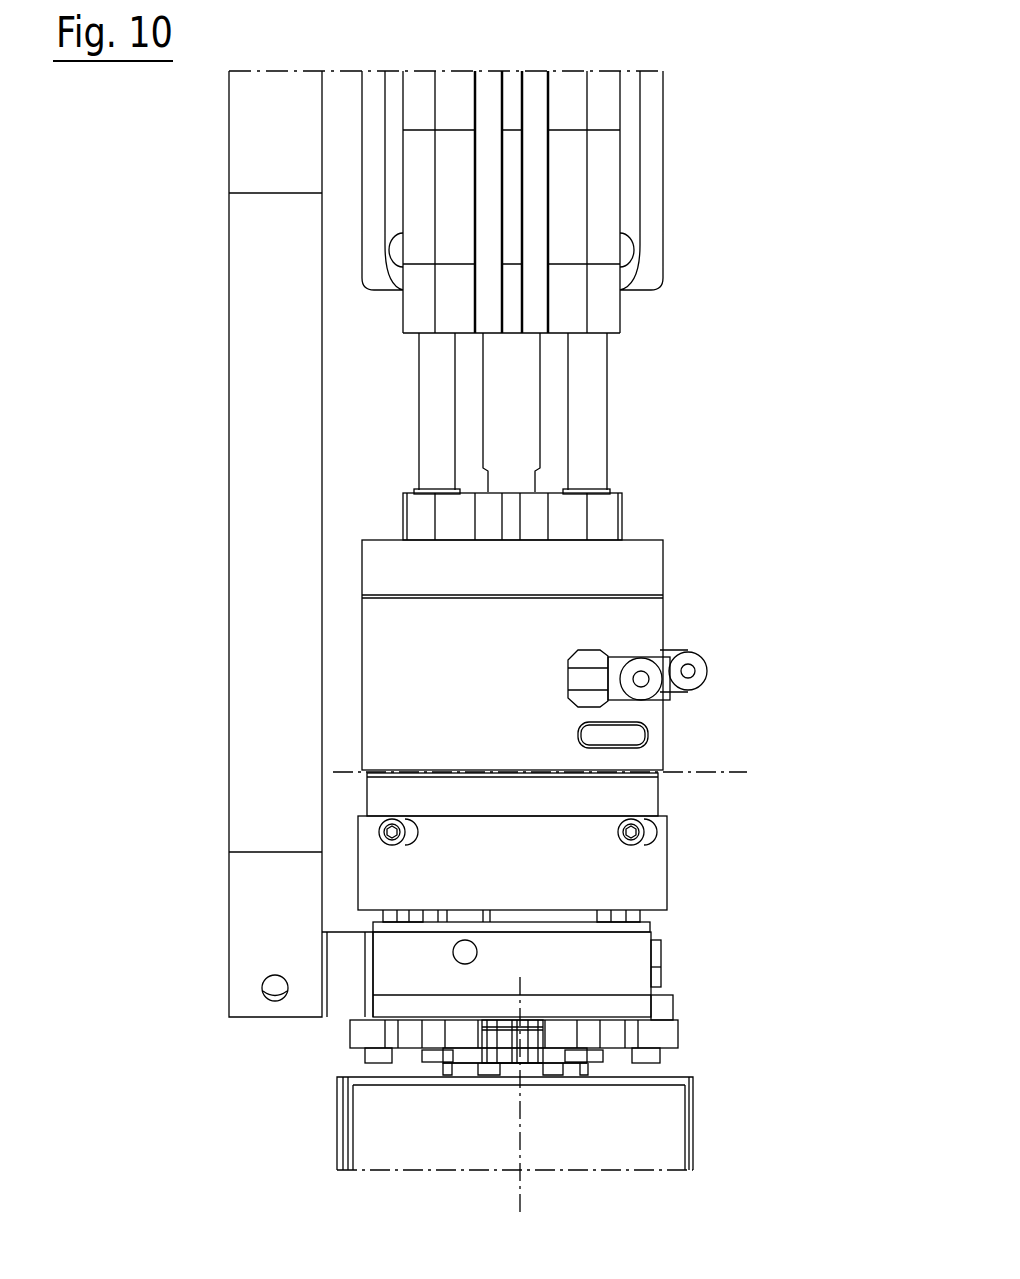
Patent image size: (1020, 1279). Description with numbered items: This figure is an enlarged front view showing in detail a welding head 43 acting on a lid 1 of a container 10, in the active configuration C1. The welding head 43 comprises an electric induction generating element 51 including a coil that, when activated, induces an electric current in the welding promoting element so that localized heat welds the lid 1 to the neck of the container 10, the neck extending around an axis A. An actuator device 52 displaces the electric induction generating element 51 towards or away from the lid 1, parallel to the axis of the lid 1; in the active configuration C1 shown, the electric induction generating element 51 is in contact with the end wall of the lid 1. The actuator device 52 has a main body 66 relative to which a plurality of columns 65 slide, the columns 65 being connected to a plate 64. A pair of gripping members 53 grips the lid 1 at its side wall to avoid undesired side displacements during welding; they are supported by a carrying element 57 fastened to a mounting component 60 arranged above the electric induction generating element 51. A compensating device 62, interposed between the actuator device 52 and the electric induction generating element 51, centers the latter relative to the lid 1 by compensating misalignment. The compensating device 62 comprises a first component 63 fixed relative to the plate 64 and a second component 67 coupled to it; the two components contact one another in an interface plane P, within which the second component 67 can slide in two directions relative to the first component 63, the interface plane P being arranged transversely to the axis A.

The lid 1 is at (533, 1043).
The container 10 is at (678, 1132).
The welding head 43 is at (699, 331).
The electric induction generating element 51 is at (628, 1008).
The actuator device 52 is at (599, 207).
The gripping members 53 is at (362, 1032).
The carrying element 57 is at (662, 980).
The mounting component 60 is at (660, 927).
The compensating device 62 is at (739, 660).
The first component 63 is at (663, 612).
The plate 64 is at (622, 520).
The columns 65 is at (437, 418).
The main body 66 is at (420, 196).
The second component 67 is at (380, 792).
The axis A is at (518, 1142).
The active configuration C1 is at (272, 1075).
The interface plane P is at (697, 772).